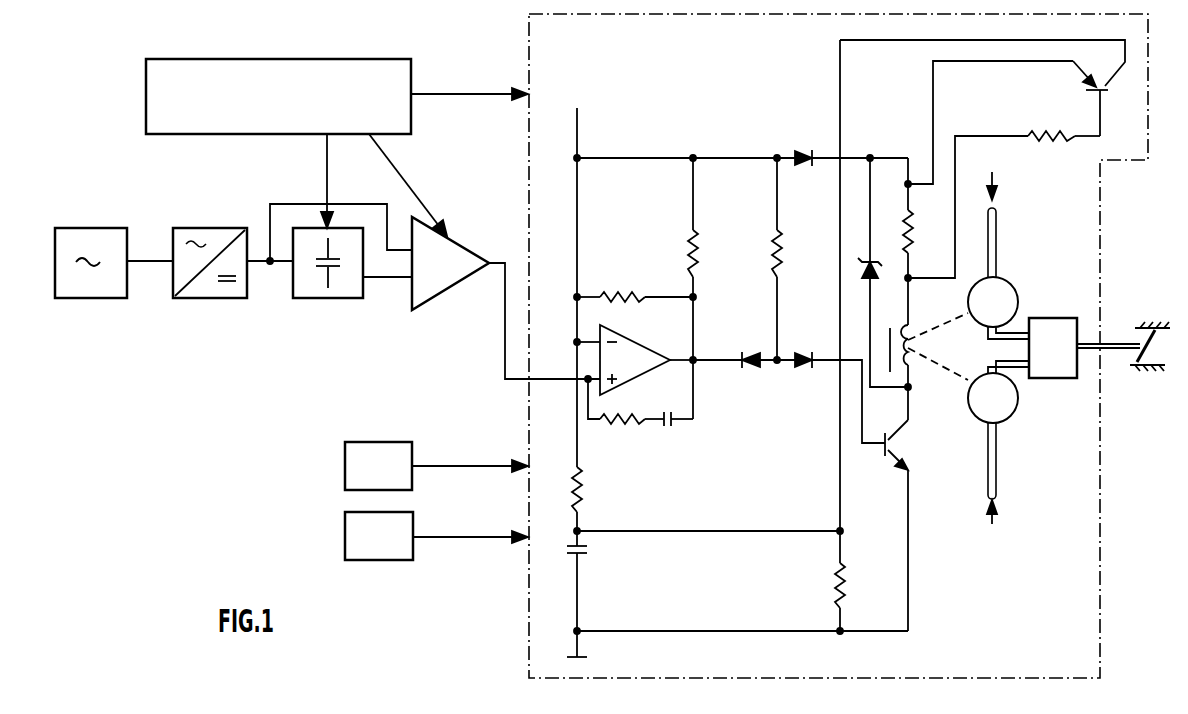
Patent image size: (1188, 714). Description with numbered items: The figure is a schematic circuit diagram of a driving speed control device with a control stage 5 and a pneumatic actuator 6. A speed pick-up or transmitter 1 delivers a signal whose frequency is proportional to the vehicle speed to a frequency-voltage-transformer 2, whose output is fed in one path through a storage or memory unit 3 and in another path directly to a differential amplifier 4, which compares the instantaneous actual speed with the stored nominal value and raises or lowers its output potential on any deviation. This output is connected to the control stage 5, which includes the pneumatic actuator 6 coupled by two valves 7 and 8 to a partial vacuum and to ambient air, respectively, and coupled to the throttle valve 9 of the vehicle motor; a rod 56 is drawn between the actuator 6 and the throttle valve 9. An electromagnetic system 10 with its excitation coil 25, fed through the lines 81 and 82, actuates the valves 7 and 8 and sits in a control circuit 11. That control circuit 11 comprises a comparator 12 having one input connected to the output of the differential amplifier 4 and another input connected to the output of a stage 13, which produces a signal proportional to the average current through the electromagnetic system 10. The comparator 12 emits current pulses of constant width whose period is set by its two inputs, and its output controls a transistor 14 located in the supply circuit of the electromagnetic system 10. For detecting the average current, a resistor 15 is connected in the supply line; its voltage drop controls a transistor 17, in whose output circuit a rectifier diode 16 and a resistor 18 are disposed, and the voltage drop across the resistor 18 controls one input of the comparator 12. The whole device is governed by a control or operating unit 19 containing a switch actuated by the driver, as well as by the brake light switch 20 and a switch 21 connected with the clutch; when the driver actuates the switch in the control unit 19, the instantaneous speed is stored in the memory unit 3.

The speed pick-up or transmitter 1 is at (88, 292).
The frequency-voltage-transformer 2 is at (208, 290).
The storage or memory unit 3 is at (330, 292).
The differential amplifier 4 is at (450, 300).
The control stage 5 is at (537, 542).
The pneumatic actuator 6 is at (1062, 363).
The valve 7 is at (1010, 290).
The valve 8 is at (1012, 412).
The throttle valve 9 is at (1150, 366).
The electromagnetic system 10 is at (902, 318).
The control circuit 11 is at (768, 439).
The comparator 12 is at (645, 358).
The stage 13 is at (1024, 101).
The transistor 14 is at (898, 448).
The resistor 15 is at (905, 244).
The rectifier diode 16 is at (866, 262).
The transistor 17 is at (1102, 92).
The resistor 18 is at (845, 585).
The control or operating unit 19 is at (282, 114).
The brake light switch 20 is at (392, 479).
The switch 21 is at (392, 550).
The excitation coil 25 is at (906, 362).
The actuating rod 56 is at (1116, 344).
The line 81 is at (912, 298).
The line 82 is at (906, 407).